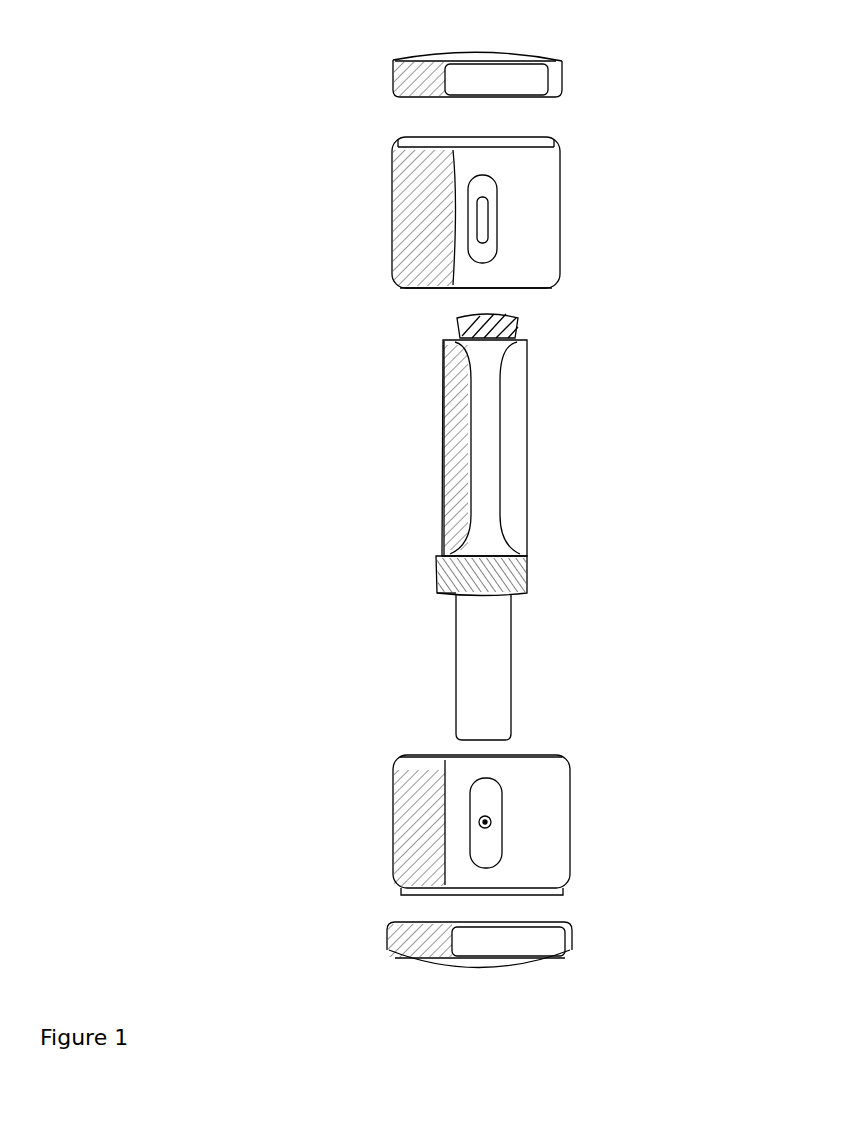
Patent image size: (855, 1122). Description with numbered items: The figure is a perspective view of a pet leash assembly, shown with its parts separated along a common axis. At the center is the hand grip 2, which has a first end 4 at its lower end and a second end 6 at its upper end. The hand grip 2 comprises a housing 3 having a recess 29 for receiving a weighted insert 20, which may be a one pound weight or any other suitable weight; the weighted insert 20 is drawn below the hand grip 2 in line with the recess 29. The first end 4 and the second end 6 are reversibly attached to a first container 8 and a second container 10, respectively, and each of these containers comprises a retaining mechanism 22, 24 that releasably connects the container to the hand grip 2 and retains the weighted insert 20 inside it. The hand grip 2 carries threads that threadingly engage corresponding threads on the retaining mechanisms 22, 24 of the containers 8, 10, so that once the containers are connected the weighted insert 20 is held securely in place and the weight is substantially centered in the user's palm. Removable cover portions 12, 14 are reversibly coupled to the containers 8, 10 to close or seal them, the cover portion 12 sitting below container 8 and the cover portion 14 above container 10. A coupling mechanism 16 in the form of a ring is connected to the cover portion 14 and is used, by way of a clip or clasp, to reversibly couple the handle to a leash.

The removable cover portion 14 is at (547, 78).
The second container 10 is at (547, 210).
The coupling mechanism 16 is at (486, 222).
The retaining mechanism 24 is at (538, 301).
The second end 6 is at (520, 342).
The hand grip 2 is at (512, 462).
The housing 3 is at (452, 445).
The first end 4 is at (527, 560).
The recess 29 is at (396, 609).
The weighted insert 20 is at (488, 636).
The retaining mechanism 22 is at (547, 748).
The first container 8 is at (557, 823).
The removable cover portion 12 is at (567, 945).